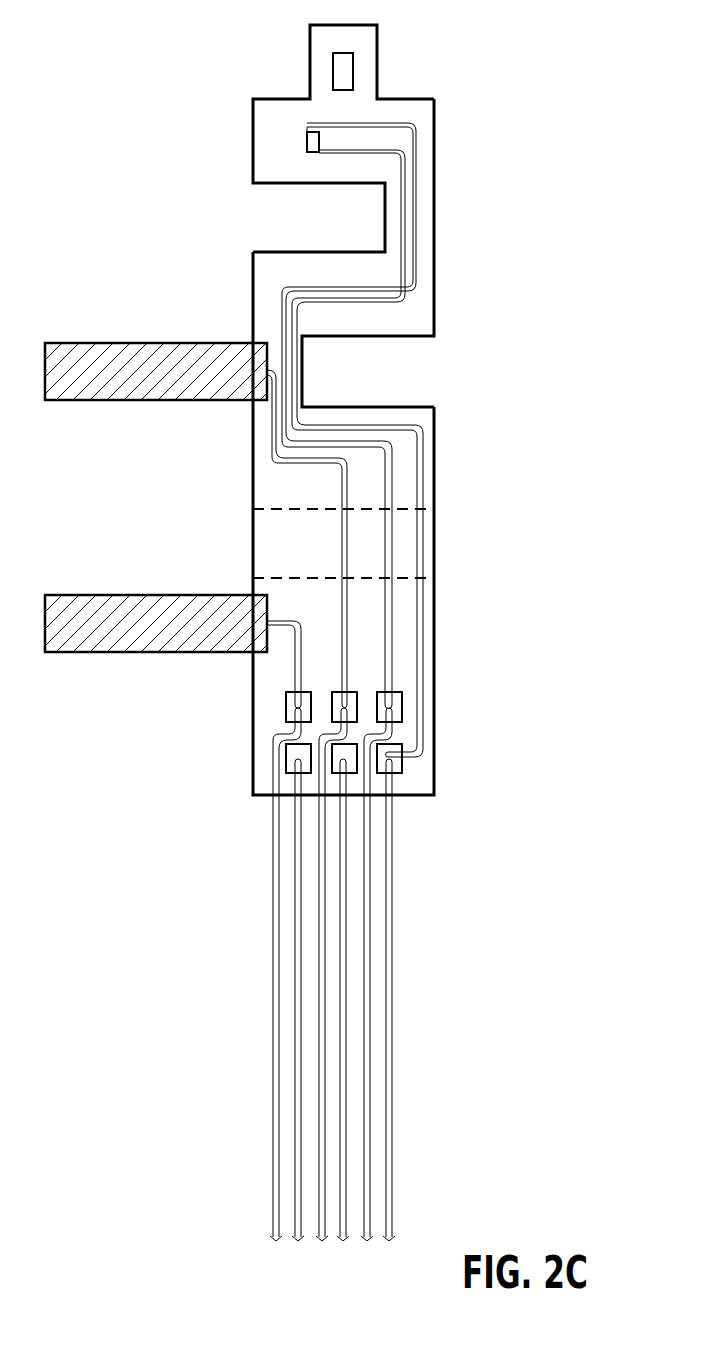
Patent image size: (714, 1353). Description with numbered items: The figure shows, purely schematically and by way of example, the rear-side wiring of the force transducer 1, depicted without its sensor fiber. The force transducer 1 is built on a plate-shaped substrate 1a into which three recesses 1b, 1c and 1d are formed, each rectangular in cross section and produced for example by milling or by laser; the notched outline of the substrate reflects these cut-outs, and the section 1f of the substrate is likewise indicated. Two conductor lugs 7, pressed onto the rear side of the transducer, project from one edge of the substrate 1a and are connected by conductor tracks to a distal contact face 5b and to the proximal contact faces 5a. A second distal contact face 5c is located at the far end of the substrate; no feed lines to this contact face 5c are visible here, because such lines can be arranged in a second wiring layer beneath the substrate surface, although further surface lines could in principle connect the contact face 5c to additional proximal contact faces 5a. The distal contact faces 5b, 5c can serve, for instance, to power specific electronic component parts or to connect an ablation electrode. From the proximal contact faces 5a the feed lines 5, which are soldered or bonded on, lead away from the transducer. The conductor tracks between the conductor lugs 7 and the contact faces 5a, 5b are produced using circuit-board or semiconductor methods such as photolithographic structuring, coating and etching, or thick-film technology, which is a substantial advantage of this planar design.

The force transducer element 1 is at (521, 97).
The plate-shaped substrate 1a is at (425, 477).
The recess 1b is at (459, 543).
The recess 1c is at (422, 373).
The recess 1d is at (241, 217).
The lower section of carrier 1f is at (418, 658).
The feed lines 5 is at (412, 1000).
The proximal contact faces 5a is at (397, 765).
The distal contact face 5b is at (307, 142).
The distal contact face 5c is at (345, 70).
The conductor lugs 7 is at (88, 422).